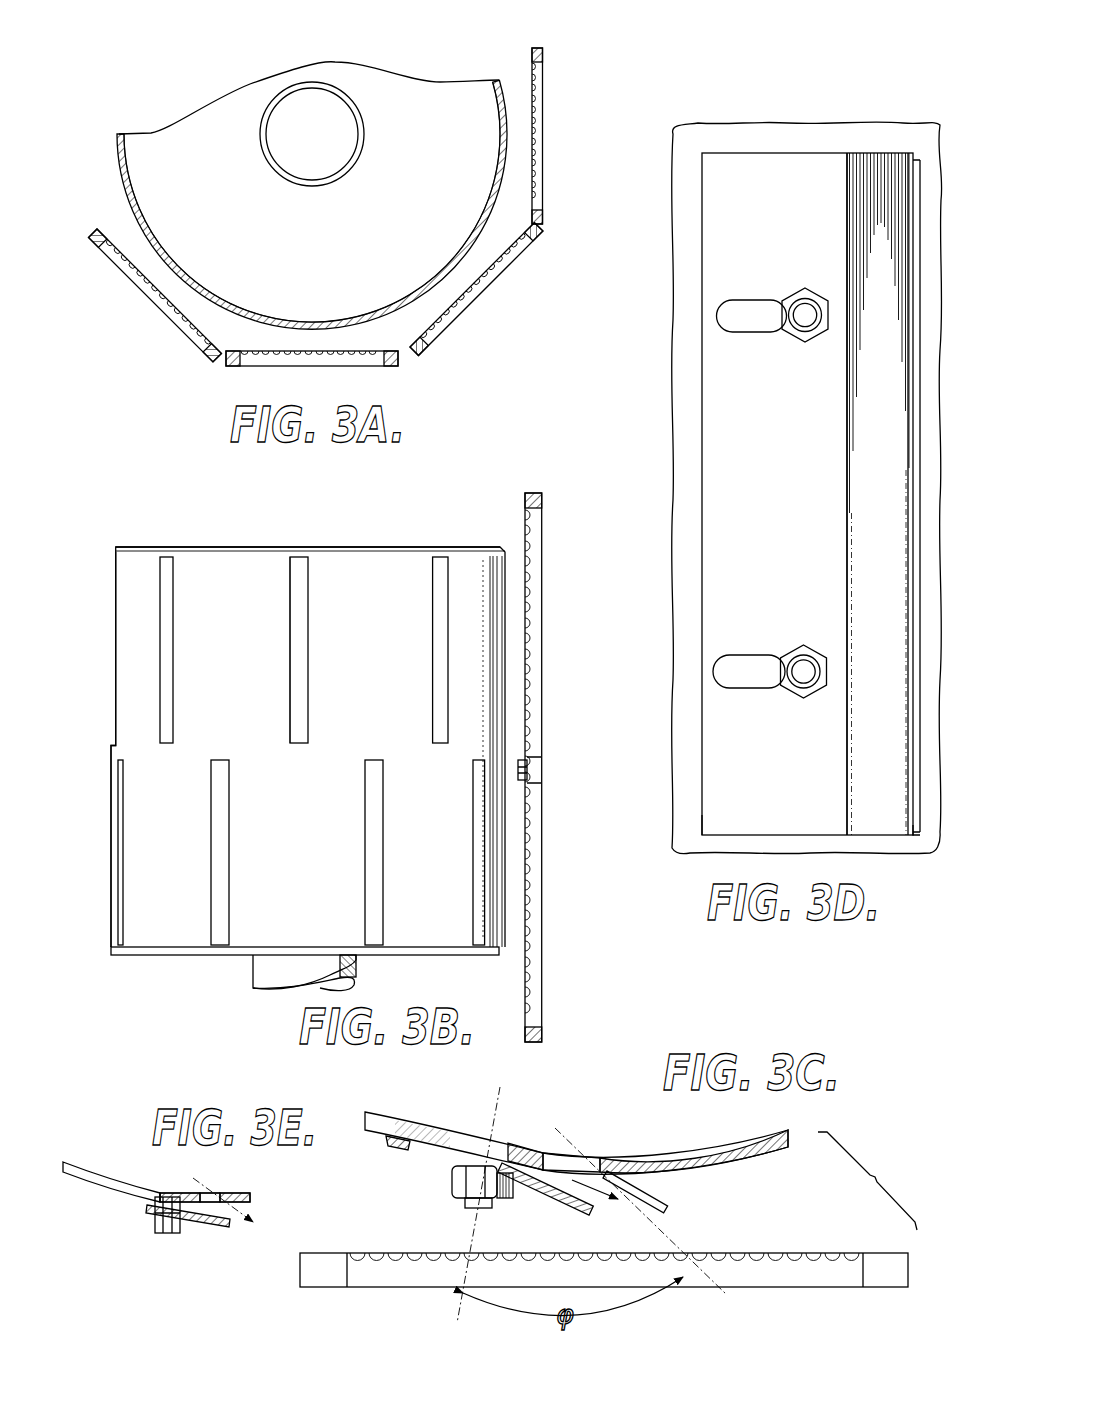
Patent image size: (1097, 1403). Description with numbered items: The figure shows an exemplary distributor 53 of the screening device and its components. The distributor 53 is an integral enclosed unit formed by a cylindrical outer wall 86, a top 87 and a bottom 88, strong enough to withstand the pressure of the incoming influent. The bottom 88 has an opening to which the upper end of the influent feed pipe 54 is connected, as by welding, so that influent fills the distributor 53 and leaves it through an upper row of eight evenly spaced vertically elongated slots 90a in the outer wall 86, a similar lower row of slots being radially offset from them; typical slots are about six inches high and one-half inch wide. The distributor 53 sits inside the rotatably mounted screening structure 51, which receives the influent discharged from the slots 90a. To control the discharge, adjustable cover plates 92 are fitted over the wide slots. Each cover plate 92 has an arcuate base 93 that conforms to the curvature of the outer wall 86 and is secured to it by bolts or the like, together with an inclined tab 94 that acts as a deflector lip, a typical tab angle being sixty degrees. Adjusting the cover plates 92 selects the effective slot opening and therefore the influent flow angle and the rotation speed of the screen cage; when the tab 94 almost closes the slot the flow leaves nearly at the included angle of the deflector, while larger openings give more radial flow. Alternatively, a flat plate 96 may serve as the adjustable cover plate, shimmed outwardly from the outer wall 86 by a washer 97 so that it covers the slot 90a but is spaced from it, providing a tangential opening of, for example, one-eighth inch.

In FIG. 3A, the screening structure 51 is at (556, 122).
In FIG. 3B, the screening structure 51 is at (543, 615).
In FIG. 3C, the screening structure 51 is at (397, 1288).
In FIG. 3A, the distributor 53 is at (121, 130).
In FIG. 3B, the distributor 53 is at (487, 530).
In FIG. 3B, the influent feed pipe 54 is at (267, 970).
In FIG. 3A, the cylindrical outer wall 86 is at (516, 58).
In FIG. 3B, the cylindrical outer wall 86 is at (115, 584).
In FIG. 3D, the cylindrical outer wall 86 is at (673, 475).
In FIG. 3C, the cylindrical outer wall 86 is at (407, 1128).
In FIG. 3E, the cylindrical outer wall 86 is at (110, 1178).
In FIG. 3B, the top 87 is at (200, 546).
In FIG. 3B, the bottom 88 is at (178, 957).
In FIG. 3A, the vertically elongated slots 90a is at (437, 280).
In FIG. 3B, the vertically elongated slots 90a is at (304, 696).
In FIG. 3D, the vertically elongated slots 90a is at (905, 218).
In FIG. 3C, the vertically elongated slots 90a is at (600, 1157).
In FIG. 3E, the vertically elongated slots 90a is at (217, 1193).
In FIG. 3D, the cover plates 92 is at (716, 488).
In FIG. 3C, the cover plates 92 is at (433, 1164).
In FIG. 3D, the arcuate base 93 is at (713, 815).
In FIG. 3C, the arcuate base 93 is at (392, 1151).
In FIG. 3D, the inclined tab 94 is at (920, 832).
In FIG. 3C, the inclined tab 94 is at (597, 1208).
In FIG. 3E, the flat plate 96 is at (207, 1227).
In FIG. 3E, the washer 97 is at (150, 1205).